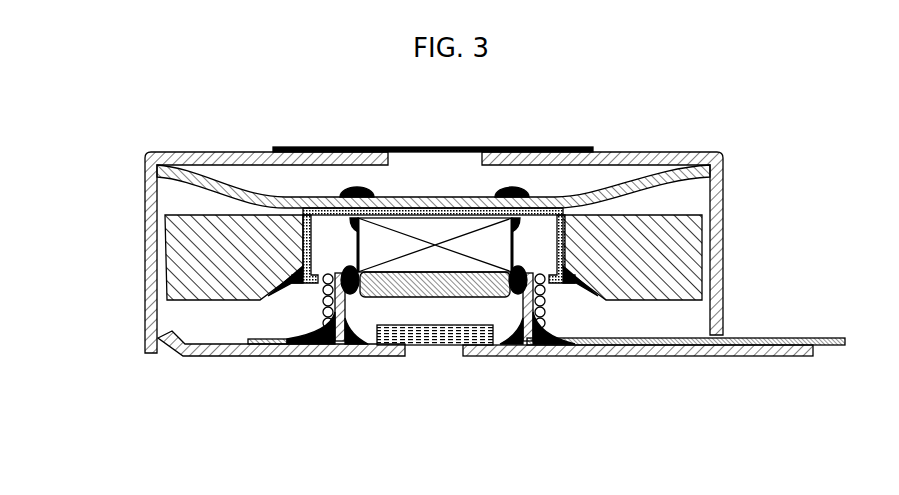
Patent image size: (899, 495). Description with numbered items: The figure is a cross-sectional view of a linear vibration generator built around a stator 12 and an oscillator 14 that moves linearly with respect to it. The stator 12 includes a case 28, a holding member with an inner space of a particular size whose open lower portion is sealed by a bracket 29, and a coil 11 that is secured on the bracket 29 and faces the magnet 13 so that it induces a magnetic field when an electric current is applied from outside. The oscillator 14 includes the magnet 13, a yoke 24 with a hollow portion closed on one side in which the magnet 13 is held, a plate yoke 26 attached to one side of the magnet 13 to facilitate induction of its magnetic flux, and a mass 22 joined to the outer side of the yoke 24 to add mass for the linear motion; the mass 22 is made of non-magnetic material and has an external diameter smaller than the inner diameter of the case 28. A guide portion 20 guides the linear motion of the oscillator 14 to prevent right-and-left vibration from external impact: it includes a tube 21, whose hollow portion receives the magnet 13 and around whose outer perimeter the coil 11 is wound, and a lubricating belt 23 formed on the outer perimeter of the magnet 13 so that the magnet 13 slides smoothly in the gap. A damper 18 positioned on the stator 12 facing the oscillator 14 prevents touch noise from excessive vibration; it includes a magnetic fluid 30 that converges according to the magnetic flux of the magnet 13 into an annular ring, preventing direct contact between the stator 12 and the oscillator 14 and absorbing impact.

The stator 12 is at (521, 254).
The case 28 is at (723, 172).
The coil 11 is at (533, 298).
The bracket 29 is at (501, 325).
The magnetic fluid 30 is at (507, 188).
The oscillator 14 is at (353, 249).
The yoke 24 is at (303, 210).
The mass 22 is at (170, 233).
The magnet 13 is at (377, 250).
The plate yoke 26 is at (330, 295).
The guide portion 20 is at (431, 374).
The lubricating belt 23 is at (513, 285).
The tube 21 is at (530, 340).
The damper 18 is at (423, 345).